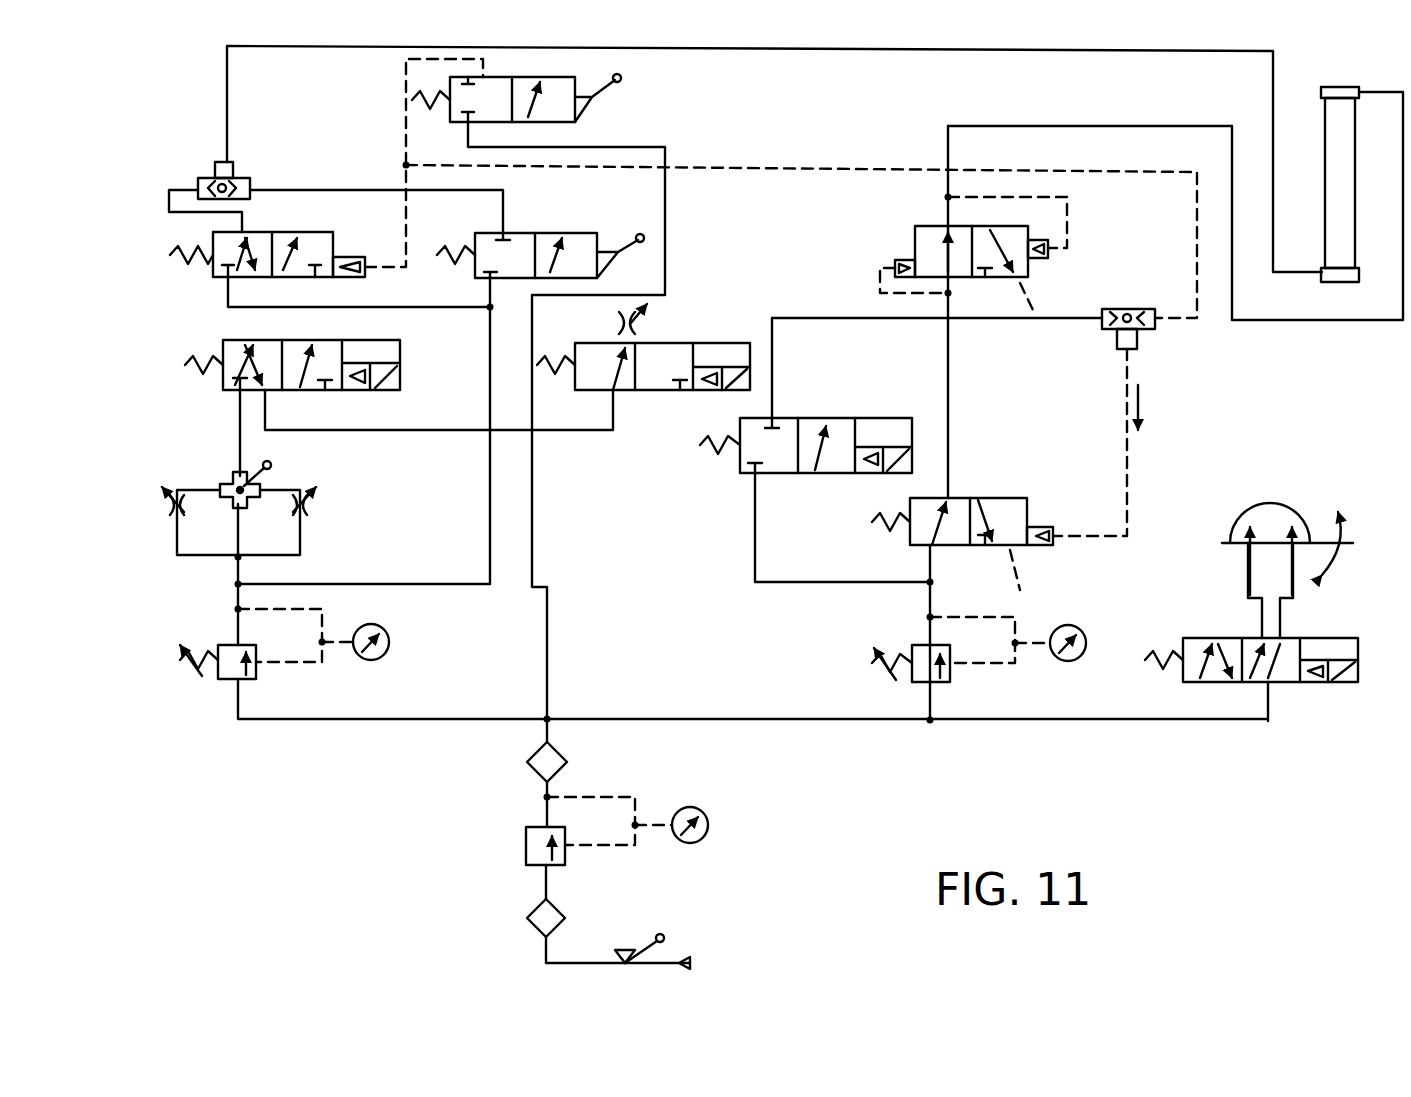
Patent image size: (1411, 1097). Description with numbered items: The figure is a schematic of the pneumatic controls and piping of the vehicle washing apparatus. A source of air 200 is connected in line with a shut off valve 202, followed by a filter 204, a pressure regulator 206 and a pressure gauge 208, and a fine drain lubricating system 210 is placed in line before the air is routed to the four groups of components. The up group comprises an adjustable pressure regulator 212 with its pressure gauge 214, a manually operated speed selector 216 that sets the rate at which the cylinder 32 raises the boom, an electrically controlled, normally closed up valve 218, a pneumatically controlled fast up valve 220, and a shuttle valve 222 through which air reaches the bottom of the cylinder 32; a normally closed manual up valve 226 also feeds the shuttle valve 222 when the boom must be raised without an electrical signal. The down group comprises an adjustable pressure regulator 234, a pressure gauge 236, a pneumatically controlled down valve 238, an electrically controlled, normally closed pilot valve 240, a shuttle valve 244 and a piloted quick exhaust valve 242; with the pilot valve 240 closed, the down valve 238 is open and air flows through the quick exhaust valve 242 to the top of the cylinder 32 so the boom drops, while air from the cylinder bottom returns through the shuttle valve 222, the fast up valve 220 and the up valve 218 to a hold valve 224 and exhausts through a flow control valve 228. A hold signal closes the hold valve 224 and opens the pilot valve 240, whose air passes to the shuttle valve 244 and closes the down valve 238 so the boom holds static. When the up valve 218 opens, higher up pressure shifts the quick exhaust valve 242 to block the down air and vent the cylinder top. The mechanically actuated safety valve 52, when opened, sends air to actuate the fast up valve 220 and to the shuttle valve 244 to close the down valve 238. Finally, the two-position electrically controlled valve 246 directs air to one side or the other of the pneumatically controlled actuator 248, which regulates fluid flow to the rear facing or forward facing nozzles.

The cylinder 32 is at (1357, 184).
The safety valve 52 is at (516, 86).
The source of air 200 is at (711, 951).
The shut off valve 202 is at (635, 943).
The filter 204 is at (562, 931).
The pressure regulator 206 is at (562, 861).
The pressure gauge 208 is at (715, 825).
The fine drain lubricating system 210 is at (573, 762).
The adjustable pressure regulator 212 is at (235, 678).
The pressure gauge 214 is at (396, 642).
The speed selector 216 is at (306, 532).
The up valve 218 is at (292, 351).
The fast up valve 220 is at (267, 241).
The shuttle valve 222 is at (238, 167).
The hold valve 224 is at (643, 379).
The manual up valve 226 is at (540, 242).
The flow control valve 228 is at (636, 323).
The adjustable pressure regulator 234 is at (926, 679).
The pressure gauge 236 is at (1093, 643).
The down valve 238 is at (962, 539).
The pilot valve 240 is at (806, 460).
The piloted quick exhaust valve 242 is at (971, 239).
The shuttle valve 244 is at (1128, 316).
The electrically controlled valve 246 is at (1278, 660).
The actuator 248 is at (1287, 560).